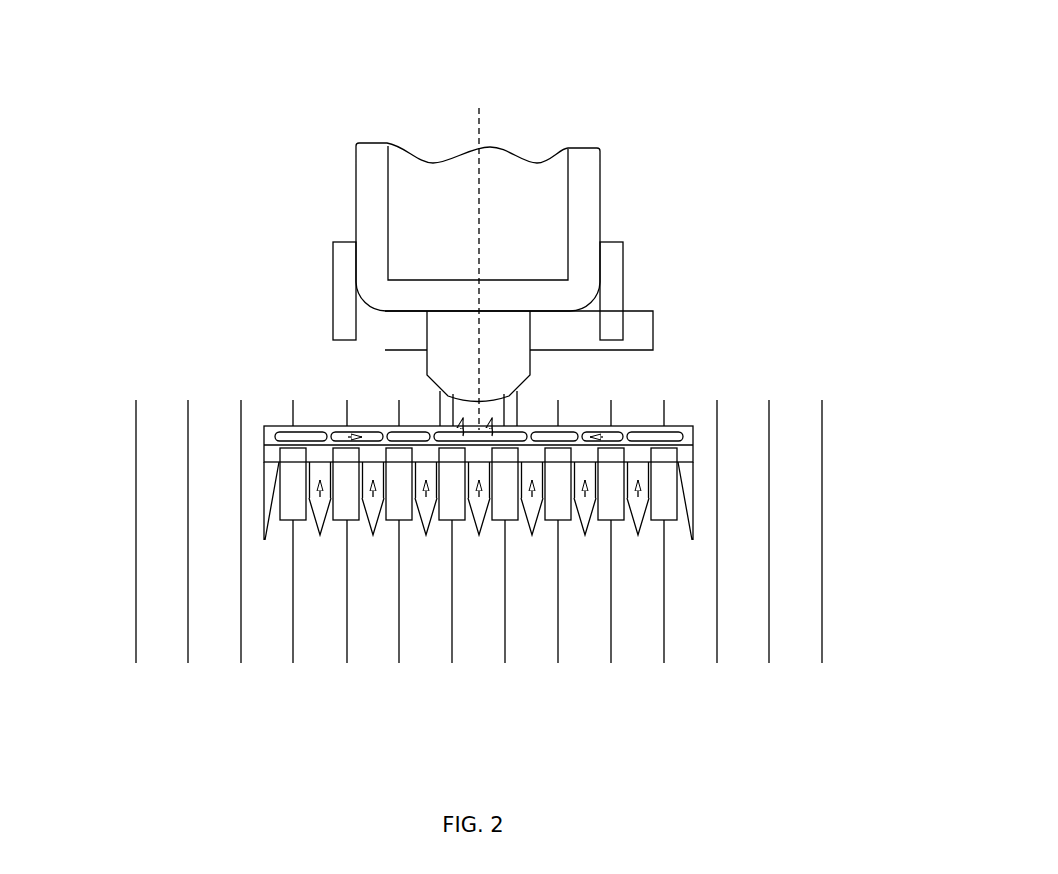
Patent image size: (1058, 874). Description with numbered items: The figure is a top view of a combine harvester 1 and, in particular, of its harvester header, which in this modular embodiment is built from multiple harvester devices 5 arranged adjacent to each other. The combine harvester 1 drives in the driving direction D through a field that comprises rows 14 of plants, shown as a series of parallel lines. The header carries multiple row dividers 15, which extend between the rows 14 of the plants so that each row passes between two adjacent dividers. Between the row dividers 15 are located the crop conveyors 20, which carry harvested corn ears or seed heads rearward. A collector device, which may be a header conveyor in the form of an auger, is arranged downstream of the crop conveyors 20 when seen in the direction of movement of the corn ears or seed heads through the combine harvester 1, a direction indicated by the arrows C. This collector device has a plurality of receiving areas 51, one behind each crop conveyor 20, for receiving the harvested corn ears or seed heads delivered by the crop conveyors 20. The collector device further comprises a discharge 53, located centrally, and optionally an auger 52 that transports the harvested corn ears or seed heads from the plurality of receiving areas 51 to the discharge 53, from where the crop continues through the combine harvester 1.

The combine harvester 1 is at (667, 173).
The harvester device 5 is at (672, 528).
The row of plants 14 is at (130, 642).
The row divider 15 is at (267, 566).
The crop conveyor 20 is at (327, 528).
The receiving area 51 is at (340, 445).
The auger 52 is at (688, 432).
The discharge 53 is at (498, 404).
The direction of movement of the corn ears or seed heads C is at (362, 442).
The driving direction D is at (479, 97).